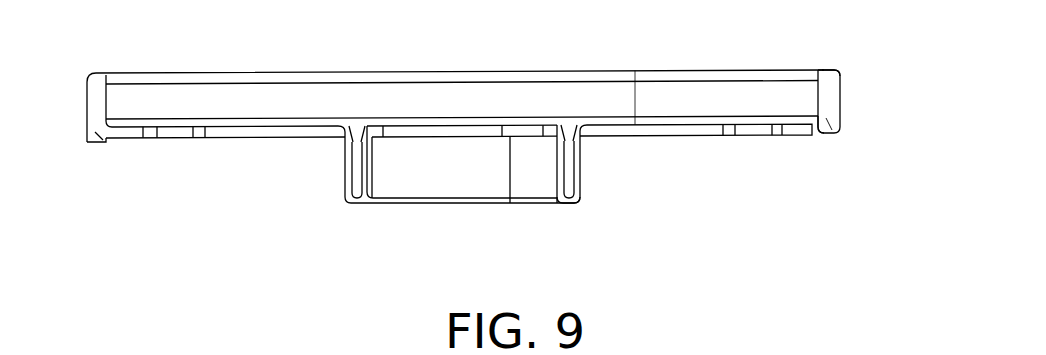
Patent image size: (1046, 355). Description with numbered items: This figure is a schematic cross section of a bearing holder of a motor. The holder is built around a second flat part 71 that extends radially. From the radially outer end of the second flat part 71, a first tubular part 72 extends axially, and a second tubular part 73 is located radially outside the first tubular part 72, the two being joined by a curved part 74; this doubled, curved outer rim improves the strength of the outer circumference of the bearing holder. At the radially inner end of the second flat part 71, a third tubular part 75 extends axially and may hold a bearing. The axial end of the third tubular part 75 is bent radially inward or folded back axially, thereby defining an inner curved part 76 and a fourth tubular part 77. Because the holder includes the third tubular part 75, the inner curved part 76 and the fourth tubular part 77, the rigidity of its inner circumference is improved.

The second flat part 71 is at (678, 139).
The first tubular part 72 is at (818, 116).
The second tubular part 73 is at (841, 109).
The curved part 74 is at (830, 59).
The third tubular part 75 is at (575, 164).
The inner curved part 76 is at (570, 209).
The fourth tubular part 77 is at (552, 169).